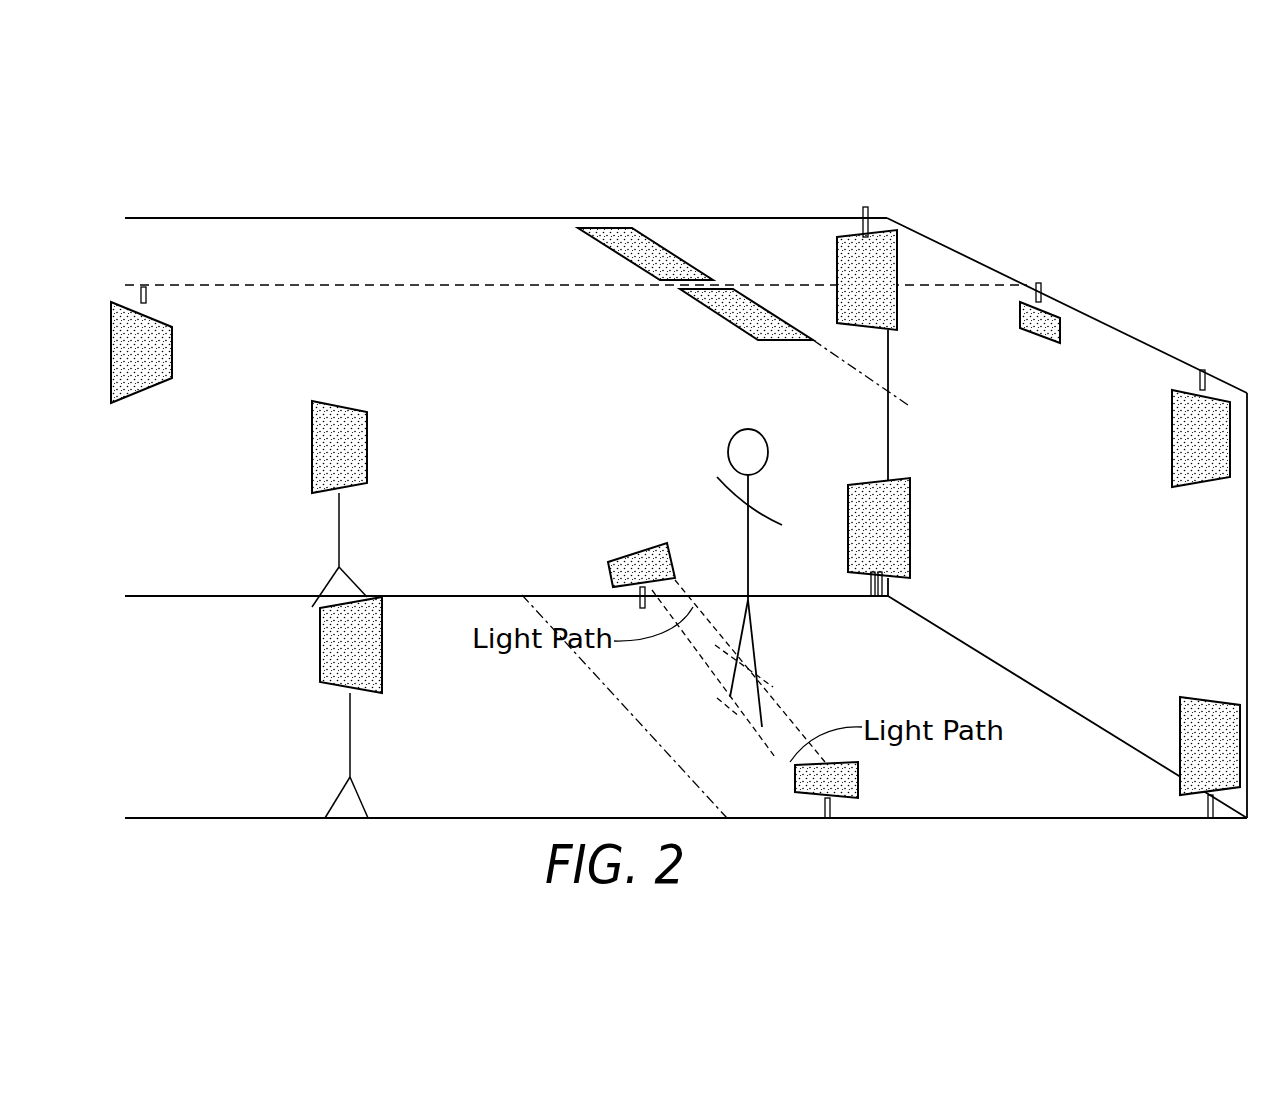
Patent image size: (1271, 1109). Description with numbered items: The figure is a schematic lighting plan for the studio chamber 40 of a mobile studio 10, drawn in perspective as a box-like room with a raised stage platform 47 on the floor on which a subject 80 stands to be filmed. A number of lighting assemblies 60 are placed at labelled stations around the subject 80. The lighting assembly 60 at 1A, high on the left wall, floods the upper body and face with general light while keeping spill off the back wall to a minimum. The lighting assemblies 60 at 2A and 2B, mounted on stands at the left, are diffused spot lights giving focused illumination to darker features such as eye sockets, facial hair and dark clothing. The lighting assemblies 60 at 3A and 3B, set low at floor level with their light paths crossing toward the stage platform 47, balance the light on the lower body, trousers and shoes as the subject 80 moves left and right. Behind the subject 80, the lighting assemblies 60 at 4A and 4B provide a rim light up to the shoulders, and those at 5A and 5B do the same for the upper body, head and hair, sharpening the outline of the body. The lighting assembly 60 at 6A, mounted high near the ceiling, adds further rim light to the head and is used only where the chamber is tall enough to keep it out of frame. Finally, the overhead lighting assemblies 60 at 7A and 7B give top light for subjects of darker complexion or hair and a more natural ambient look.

The mobile studio 10 is at (226, 186).
The studio chamber 40 is at (183, 671).
The stage platform 47 is at (597, 678).
The lighting assembly 60 is at (644, 512).
The subject 80 is at (749, 557).
The lighting assembly position 1A is at (72, 404).
The lighting assembly position 2A is at (273, 486).
The lighting assembly position 2B is at (320, 624).
The lighting assembly position 3A is at (646, 510).
The lighting assembly position 3B is at (760, 796).
The lighting assembly position 4A is at (910, 485).
The lighting assembly position 4B is at (1143, 798).
The lighting assembly position 5A is at (920, 266).
The lighting assembly position 5B is at (1133, 484).
The lighting assembly position 6A is at (1040, 380).
The lighting assembly position 7A is at (703, 238).
The lighting assembly position 7B is at (777, 343).